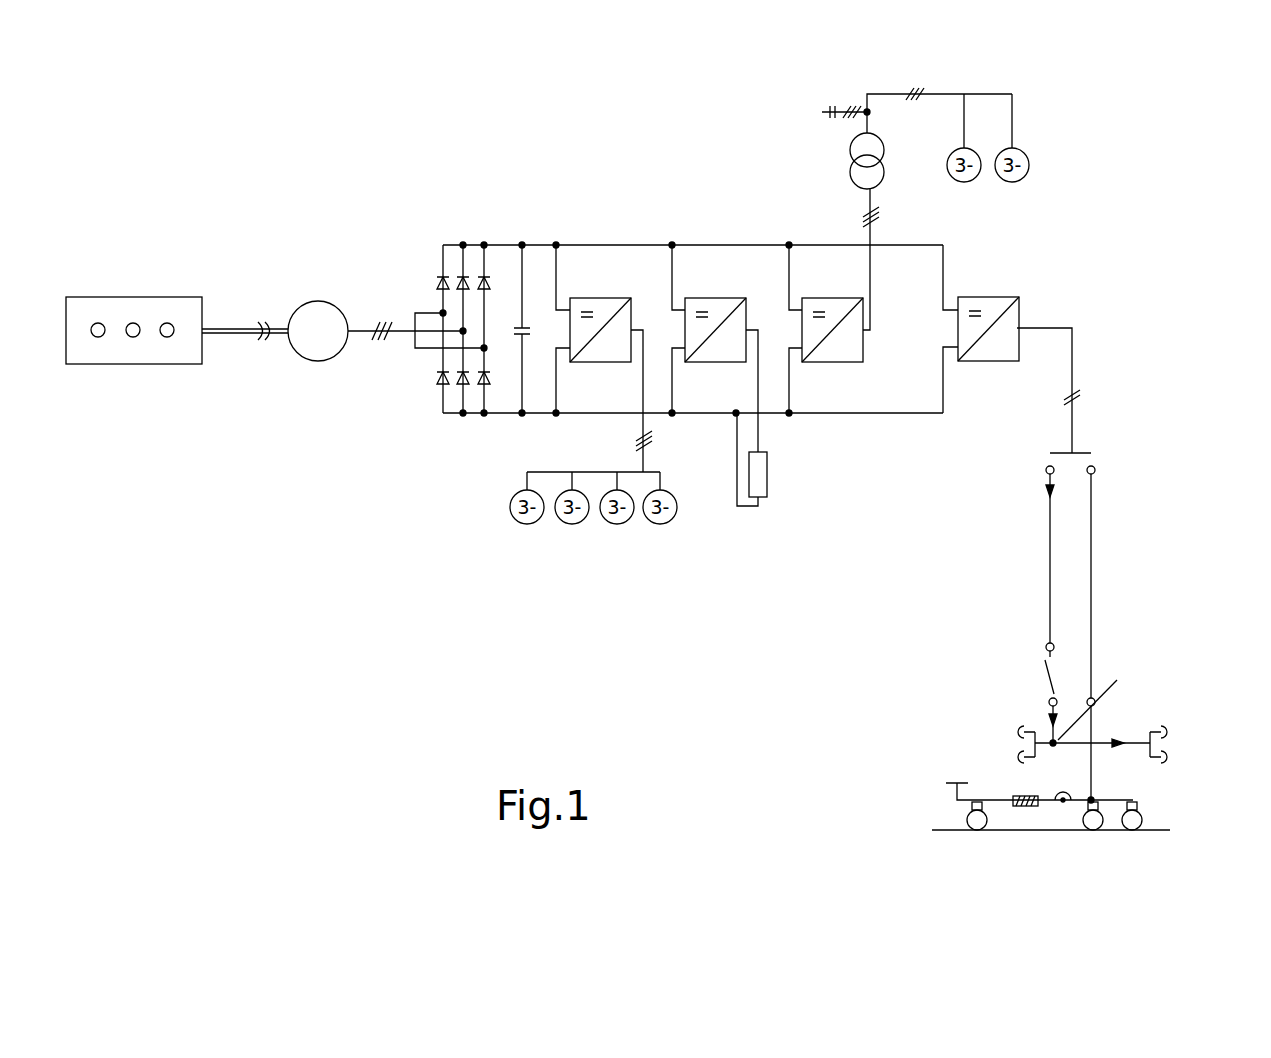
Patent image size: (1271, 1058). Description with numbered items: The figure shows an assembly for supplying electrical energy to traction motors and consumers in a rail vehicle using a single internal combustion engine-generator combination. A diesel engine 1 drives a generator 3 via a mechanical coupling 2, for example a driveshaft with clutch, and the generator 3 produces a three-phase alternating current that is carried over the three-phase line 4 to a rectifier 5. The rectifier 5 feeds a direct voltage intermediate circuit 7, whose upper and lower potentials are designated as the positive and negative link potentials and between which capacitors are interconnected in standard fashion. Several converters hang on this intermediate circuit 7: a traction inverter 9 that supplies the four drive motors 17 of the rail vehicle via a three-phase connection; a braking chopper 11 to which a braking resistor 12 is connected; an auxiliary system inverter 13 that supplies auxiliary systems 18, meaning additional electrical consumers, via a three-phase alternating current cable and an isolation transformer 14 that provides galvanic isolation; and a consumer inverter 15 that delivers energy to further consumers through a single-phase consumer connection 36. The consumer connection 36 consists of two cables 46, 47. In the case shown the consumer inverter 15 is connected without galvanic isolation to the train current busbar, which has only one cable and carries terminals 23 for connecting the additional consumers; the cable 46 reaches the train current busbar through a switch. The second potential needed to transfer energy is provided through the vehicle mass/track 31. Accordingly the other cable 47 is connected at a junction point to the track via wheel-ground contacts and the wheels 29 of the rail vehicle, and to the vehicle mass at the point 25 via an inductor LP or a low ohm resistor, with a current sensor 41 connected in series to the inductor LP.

The diesel engine 1 is at (113, 365).
The mechanical coupling 2 is at (255, 333).
The generator 3 is at (325, 363).
The three-phase line 4 is at (393, 335).
The rectifier 5 is at (444, 422).
The direct voltage intermediate circuit 7 is at (583, 212).
The traction inverter 9 is at (629, 298).
The braking chopper 11 is at (737, 298).
The braking resistor 12 is at (767, 482).
The auxiliary system inverter 13 is at (867, 340).
The isolation transformer 14 is at (887, 175).
The consumer inverter 15 is at (1017, 302).
The drive motors 17 is at (546, 530).
The auxiliary systems 18 is at (1031, 165).
The terminals 23 is at (1015, 727).
The vehicle mass connection point 25 is at (943, 792).
The wheels 29 is at (1142, 818).
The vehicle mass/track 31 is at (943, 833).
The consumer connection 36 is at (1073, 367).
The current sensor 41 is at (1067, 808).
The cable 46 is at (1048, 577).
The cable 47 is at (1095, 573).
The inductor LP is at (1022, 807).